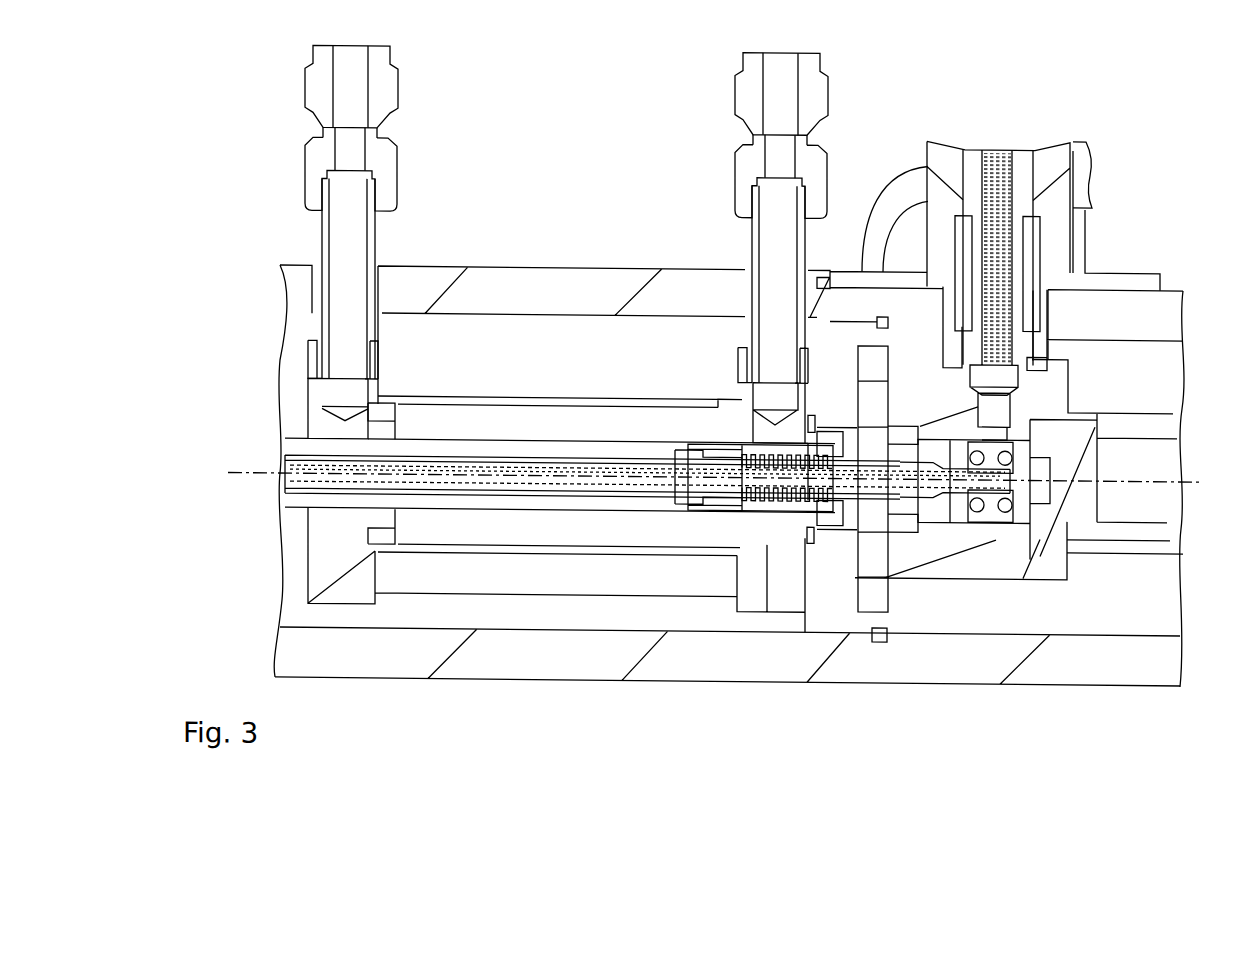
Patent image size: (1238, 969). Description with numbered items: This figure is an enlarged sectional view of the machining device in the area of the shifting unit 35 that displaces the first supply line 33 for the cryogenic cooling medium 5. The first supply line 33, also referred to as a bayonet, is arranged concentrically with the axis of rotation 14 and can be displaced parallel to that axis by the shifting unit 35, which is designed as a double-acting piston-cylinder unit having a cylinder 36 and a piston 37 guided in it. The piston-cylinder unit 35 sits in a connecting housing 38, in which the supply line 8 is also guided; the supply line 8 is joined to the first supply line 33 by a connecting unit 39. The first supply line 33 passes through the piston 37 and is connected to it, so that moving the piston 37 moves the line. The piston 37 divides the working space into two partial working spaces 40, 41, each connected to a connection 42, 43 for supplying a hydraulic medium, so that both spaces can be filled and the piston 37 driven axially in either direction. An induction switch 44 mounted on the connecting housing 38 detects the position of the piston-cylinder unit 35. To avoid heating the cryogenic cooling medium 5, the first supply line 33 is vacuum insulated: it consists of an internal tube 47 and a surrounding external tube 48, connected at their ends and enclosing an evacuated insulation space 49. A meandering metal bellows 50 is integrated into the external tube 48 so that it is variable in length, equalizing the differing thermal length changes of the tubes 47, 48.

The cryogenic cooling medium 5 is at (993, 147).
The supply line 8 is at (1038, 149).
The axis of rotation 14 is at (272, 473).
The first supply line 33 is at (278, 481).
The shifting unit 35 is at (470, 343).
The cylinder 36 is at (513, 393).
The piston 37 is at (385, 426).
The connecting housing 38 is at (593, 272).
The connecting unit 39 is at (960, 563).
The partial working space 40 is at (350, 420).
The partial working space 41 is at (647, 416).
The connection 42 is at (305, 85).
The connection 43 is at (745, 86).
The induction switch 44 is at (1092, 170).
The internal tube 47 is at (303, 455).
The external tube 48 is at (330, 455).
The insulation space 49 is at (318, 463).
The metal bellows 50 is at (766, 490).